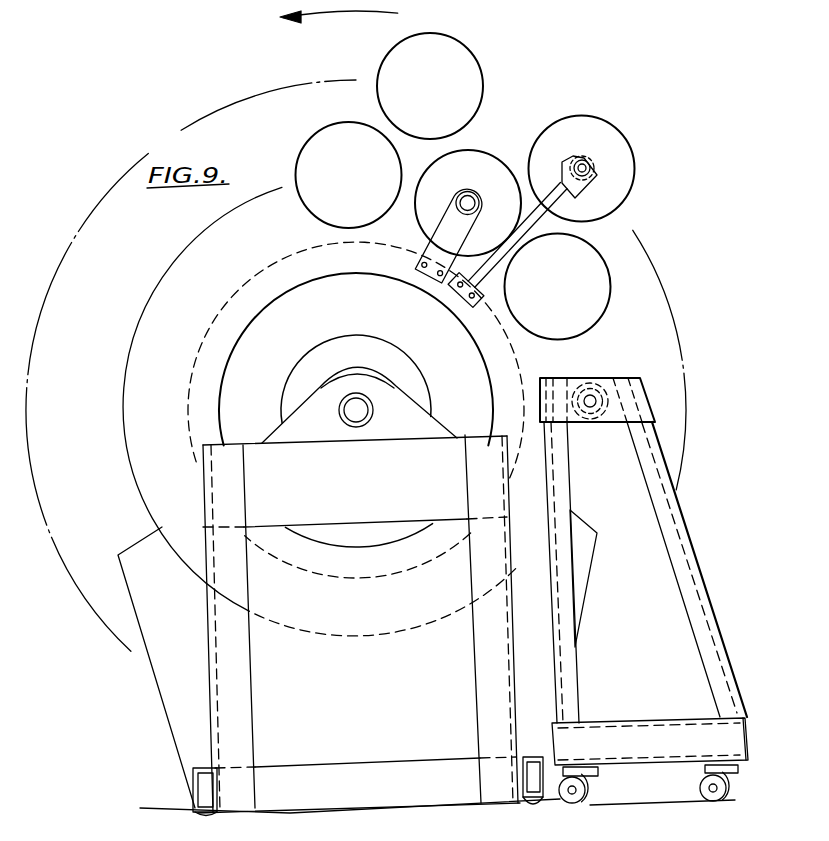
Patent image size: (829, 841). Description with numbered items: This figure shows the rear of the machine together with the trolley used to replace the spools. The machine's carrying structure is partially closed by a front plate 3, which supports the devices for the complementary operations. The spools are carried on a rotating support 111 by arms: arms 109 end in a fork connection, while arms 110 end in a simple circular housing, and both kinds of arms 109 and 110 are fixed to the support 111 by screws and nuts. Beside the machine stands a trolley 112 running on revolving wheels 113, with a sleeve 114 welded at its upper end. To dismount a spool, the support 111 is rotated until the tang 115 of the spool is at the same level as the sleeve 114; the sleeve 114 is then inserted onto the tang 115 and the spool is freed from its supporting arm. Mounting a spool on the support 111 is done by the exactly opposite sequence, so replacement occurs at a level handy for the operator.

The front plate 3 is at (152, 657).
The arm ending in a fork connection 109 is at (592, 168).
The arm ending in a simple circular housing 110 is at (448, 227).
The rotating support 111 is at (478, 317).
The trolley 112 is at (668, 530).
The revolving wheels 113 is at (700, 787).
The sleeve 114 is at (593, 398).
The tang 115 is at (573, 165).